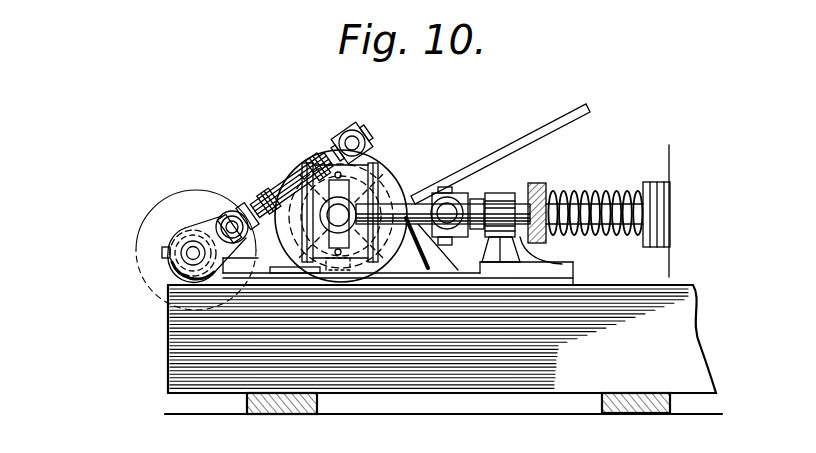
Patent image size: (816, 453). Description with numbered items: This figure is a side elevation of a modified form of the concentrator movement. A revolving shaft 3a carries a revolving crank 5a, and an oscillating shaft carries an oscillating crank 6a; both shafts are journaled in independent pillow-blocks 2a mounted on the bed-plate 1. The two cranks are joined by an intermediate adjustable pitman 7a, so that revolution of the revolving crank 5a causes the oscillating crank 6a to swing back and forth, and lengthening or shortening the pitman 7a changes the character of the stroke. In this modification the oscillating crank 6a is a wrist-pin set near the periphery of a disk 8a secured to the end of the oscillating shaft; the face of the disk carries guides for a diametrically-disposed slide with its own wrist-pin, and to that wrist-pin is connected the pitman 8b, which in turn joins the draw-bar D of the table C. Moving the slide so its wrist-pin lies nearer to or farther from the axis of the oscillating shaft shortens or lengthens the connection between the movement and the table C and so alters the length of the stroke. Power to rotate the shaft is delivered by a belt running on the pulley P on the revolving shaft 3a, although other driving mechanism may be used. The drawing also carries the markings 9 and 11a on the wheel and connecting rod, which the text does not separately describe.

The bed-plate 1 is at (540, 266).
The pillow-block 2a is at (172, 276).
The revolving shaft 3a is at (186, 254).
The revolving crank 5a is at (233, 216).
The oscillating crank 6a is at (366, 140).
The adjustable pitman 7a is at (308, 198).
The disk 8a is at (390, 205).
The pitman 8b is at (414, 203).
The wheel 9 is at (316, 226).
The connecting rod 11a is at (300, 190).
The fast pulley P is at (168, 208).
The draw-bar D is at (597, 196).
The table C is at (669, 211).